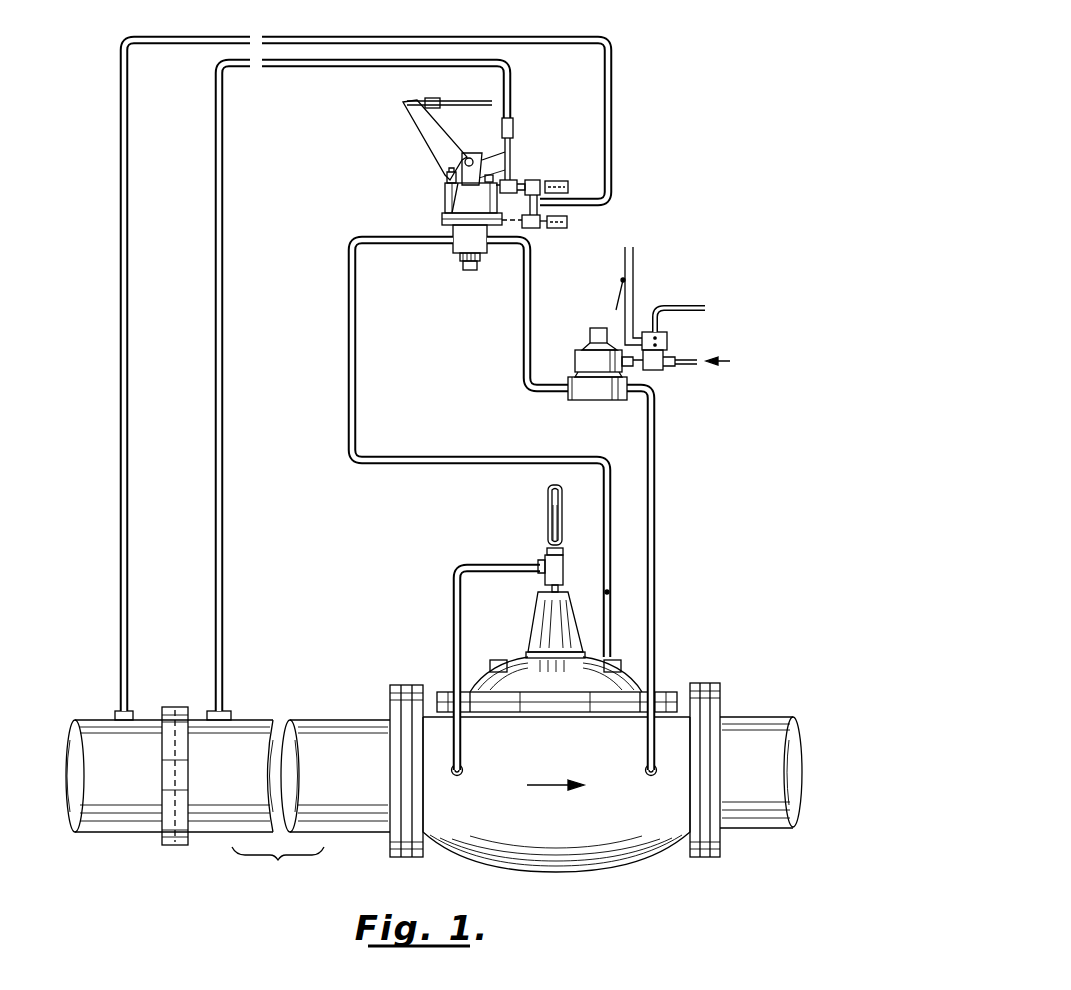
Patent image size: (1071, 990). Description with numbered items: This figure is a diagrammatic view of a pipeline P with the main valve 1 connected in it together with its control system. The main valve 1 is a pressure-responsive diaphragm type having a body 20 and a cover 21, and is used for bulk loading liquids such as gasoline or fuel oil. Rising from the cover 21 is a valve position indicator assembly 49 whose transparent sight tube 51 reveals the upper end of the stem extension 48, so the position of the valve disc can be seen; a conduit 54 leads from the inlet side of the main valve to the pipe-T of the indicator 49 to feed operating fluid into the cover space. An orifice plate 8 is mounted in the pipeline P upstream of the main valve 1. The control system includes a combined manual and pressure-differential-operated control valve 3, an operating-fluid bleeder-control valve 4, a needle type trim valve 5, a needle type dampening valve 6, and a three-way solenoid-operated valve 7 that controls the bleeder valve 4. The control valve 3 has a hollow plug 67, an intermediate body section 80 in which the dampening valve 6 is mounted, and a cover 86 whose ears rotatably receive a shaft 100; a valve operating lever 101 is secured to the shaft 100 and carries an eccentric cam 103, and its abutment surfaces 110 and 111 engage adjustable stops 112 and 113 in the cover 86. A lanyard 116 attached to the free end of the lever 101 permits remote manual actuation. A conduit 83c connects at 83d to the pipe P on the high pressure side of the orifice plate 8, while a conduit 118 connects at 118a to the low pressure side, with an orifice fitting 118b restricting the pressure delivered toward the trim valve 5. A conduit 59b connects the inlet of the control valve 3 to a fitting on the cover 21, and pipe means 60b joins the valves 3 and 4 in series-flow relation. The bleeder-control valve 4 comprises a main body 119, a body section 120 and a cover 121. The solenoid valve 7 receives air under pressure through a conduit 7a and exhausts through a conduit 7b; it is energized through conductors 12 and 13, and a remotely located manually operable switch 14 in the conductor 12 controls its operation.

The main valve 1 is at (555, 732).
The body 20 is at (630, 842).
The cover 21 is at (527, 655).
The control valve 3 is at (476, 179).
The bleeder-control valve 4 is at (583, 360).
The trim valve 5 is at (563, 165).
The dampening valve 6 is at (563, 230).
The solenoid-operated valve 7 is at (676, 324).
The conduit 7a is at (687, 366).
The conduit 7b is at (672, 305).
The orifice plate 8 is at (165, 747).
The conductor 12 is at (623, 247).
The conductor 13 is at (634, 247).
The manually operable switch 14 is at (616, 284).
The stem extension 48 is at (548, 527).
The valve position indicator assembly 49 is at (527, 529).
The transparent sight tube 51 is at (550, 498).
The conduit 54 is at (453, 610).
The conduit 59b is at (365, 238).
The pipe means 60b is at (656, 516).
The hollow plug 67 is at (475, 274).
The intermediate body section 80 is at (453, 247).
The conduit 83c is at (263, 40).
The connection 83d is at (118, 711).
The cover 86 is at (446, 196).
The shaft 100 is at (464, 153).
The valve operating lever 101 is at (403, 102).
The cam 103 is at (505, 164).
The abutment surface 110 is at (456, 207).
The abutment surface 111 is at (490, 150).
The adjustable stop 112 is at (447, 172).
The adjustable stop 113 is at (508, 180).
The lanyard 116 is at (462, 101).
The conduit 118 is at (265, 66).
The connection 118a is at (212, 711).
The orifice fitting 118b is at (514, 125).
The main body 119 is at (610, 404).
The body section 120 is at (576, 366).
The cover 121 is at (594, 328).
The pipeline P is at (288, 720).